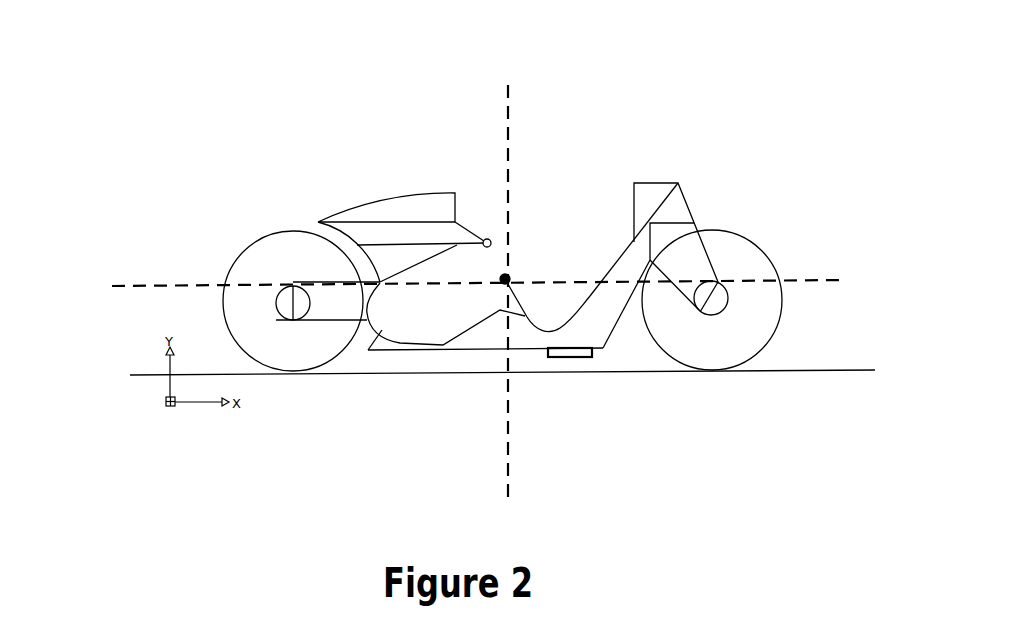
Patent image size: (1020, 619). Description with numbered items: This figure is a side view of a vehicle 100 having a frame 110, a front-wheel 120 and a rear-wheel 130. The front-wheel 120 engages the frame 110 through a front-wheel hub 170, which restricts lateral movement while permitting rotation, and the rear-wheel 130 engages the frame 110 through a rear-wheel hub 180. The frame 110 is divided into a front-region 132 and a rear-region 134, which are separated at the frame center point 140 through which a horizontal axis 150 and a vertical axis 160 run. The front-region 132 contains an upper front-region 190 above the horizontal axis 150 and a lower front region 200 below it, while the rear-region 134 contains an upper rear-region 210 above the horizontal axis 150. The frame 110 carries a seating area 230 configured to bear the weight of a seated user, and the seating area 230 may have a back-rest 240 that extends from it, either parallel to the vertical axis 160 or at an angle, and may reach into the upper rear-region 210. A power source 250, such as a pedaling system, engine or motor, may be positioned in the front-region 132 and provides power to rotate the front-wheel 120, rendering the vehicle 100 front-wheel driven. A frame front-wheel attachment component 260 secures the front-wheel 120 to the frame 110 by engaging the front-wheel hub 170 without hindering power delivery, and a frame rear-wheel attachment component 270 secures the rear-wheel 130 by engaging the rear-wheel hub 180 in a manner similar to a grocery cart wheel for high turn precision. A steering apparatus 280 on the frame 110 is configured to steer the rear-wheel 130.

The vehicle 100 is at (333, 147).
The frame 110 is at (402, 225).
The front-wheel 120 is at (240, 234).
The rear-wheel 130 is at (797, 212).
The front-region 132 is at (370, 58).
The rear-region 134 is at (640, 85).
The frame center point 140 is at (510, 275).
The horizontal axis 150 is at (481, 284).
The vertical axis 160 is at (527, 120).
The front-wheel hub 170 is at (306, 306).
The rear-wheel hub 180 is at (699, 313).
The upper front-region 190 is at (307, 183).
The lower front region 200 is at (342, 383).
The upper rear-region 210 is at (758, 153).
The seating area 230 is at (573, 362).
The back-rest 240 is at (628, 308).
The power source 250 is at (478, 312).
The frame front-wheel attachment component 260 is at (328, 301).
The frame rear-wheel attachment component 270 is at (671, 270).
The steering apparatus 280 is at (491, 240).